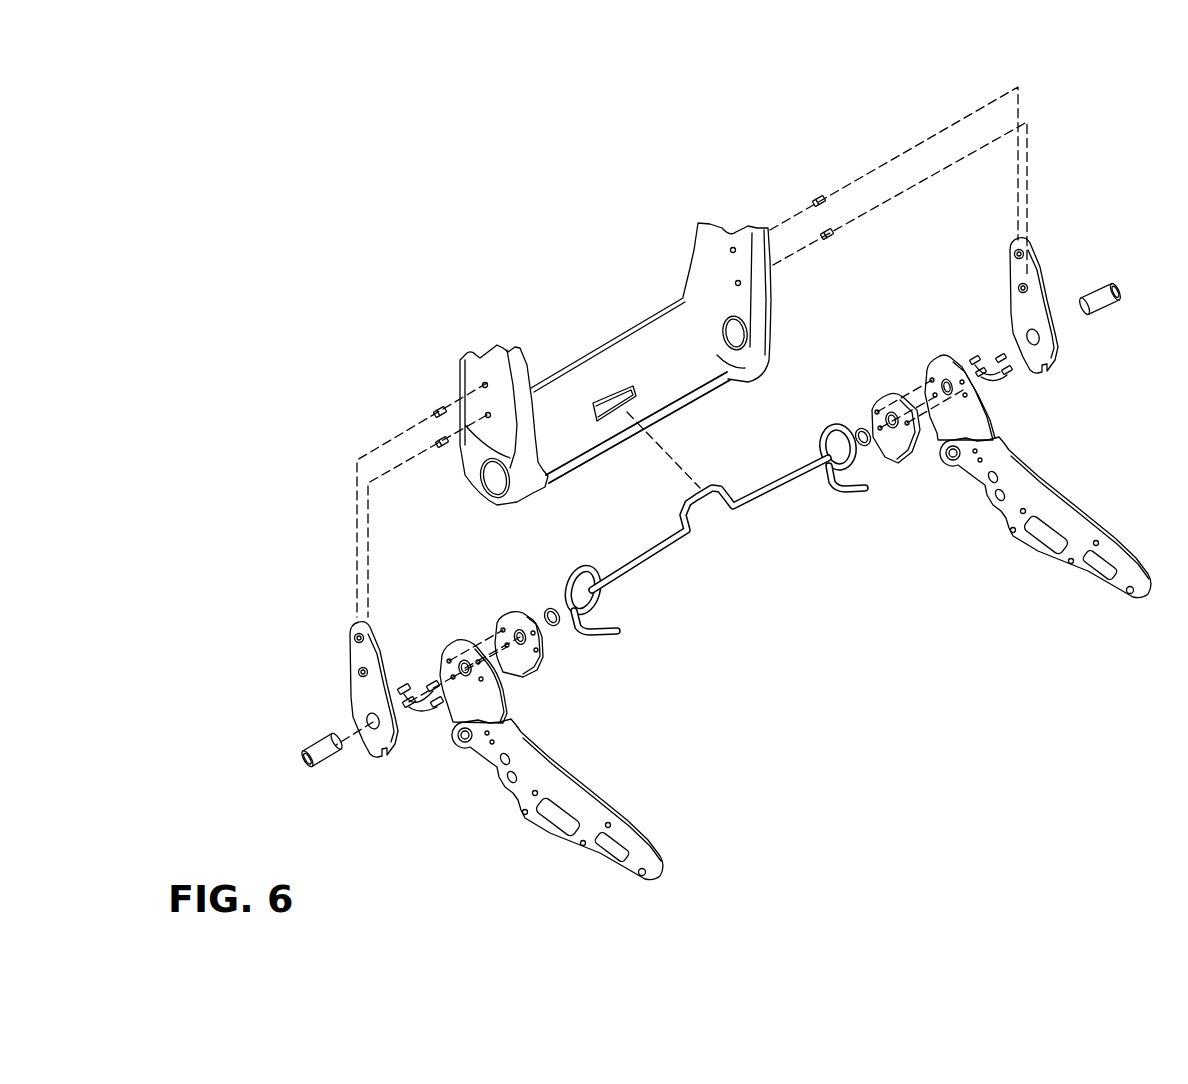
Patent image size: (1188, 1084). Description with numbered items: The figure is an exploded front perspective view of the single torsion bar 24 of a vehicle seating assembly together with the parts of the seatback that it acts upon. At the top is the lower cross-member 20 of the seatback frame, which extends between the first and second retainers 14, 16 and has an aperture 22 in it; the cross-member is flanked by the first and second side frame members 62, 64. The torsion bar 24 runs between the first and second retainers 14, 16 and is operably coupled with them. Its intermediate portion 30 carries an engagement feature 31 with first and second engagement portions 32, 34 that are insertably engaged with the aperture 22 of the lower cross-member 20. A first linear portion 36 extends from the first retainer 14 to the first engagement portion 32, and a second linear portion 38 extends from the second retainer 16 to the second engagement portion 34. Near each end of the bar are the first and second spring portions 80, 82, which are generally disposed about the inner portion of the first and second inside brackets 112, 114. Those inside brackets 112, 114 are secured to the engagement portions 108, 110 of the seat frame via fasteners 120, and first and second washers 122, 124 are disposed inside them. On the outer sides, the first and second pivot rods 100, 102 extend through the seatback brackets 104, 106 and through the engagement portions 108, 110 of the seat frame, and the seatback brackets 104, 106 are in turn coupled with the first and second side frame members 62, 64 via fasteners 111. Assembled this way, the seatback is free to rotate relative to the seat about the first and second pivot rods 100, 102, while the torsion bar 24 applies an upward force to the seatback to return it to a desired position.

The first retainer 14 is at (608, 640).
The second retainer 16 is at (860, 497).
The lower cross-member 20 is at (584, 325).
The aperture 22 is at (607, 393).
The single torsion bar 24 is at (686, 541).
The intermediate portion 30 is at (715, 534).
The engagement feature 31 is at (707, 487).
The first engagement portion 32 is at (682, 522).
The second engagement portion 34 is at (733, 492).
The first linear portion 36 is at (640, 568).
The second linear portion 38 is at (780, 484).
The first side frame member 62 is at (470, 370).
The second side frame member 64 is at (760, 228).
The first spring portion 80 is at (594, 608).
The second spring portion 82 is at (847, 470).
The first pivot rod 100 is at (330, 762).
The second pivot rod 102 is at (1097, 306).
The seatback bracket 104 is at (388, 756).
The seatback bracket 106 is at (1058, 362).
The engagement portion 108 is at (448, 640).
The engagement portion 110 is at (935, 370).
The fasteners 111 is at (436, 441).
The first inside bracket 112 is at (512, 613).
The second inside bracket 114 is at (873, 400).
The fasteners 120 is at (990, 377).
The first washer 122 is at (557, 630).
The second washer 124 is at (870, 450).